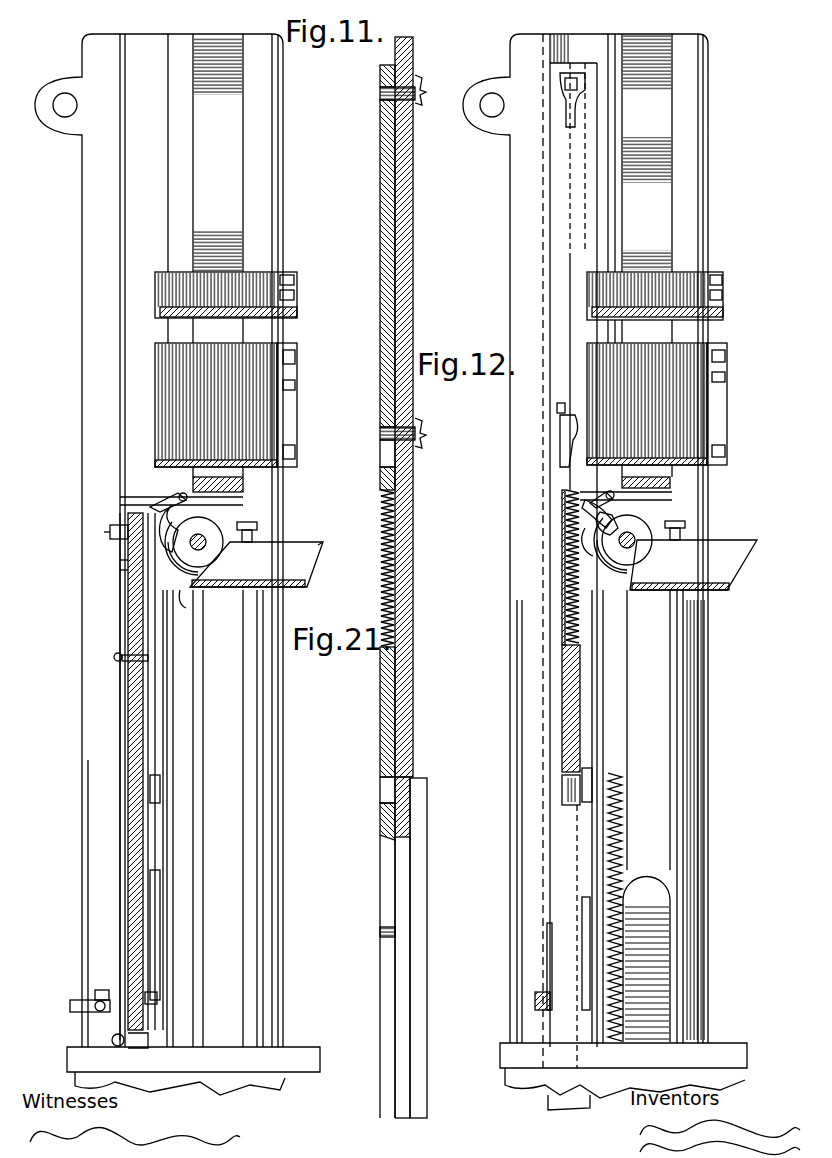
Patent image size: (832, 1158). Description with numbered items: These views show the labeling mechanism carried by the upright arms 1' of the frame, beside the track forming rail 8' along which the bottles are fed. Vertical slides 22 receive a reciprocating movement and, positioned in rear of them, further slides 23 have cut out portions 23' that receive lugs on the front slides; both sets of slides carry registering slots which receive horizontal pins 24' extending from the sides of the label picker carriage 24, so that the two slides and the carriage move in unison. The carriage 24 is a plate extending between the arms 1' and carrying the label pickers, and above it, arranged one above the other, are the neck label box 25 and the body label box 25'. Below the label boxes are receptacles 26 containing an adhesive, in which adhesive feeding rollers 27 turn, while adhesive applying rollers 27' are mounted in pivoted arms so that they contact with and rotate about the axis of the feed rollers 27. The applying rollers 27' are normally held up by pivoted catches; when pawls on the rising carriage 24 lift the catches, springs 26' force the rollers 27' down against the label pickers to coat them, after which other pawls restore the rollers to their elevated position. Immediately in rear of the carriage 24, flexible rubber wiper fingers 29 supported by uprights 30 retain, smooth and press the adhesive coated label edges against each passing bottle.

In FIG. 11, the upright arms 1' is at (175, 540).
In FIG. 21, the upright arms 1' is at (678, 730).
In FIG. 11, the track forming rails 8' is at (193, 1058).
In FIG. 21, the track forming rails 8' is at (605, 1076).
In FIG. 12, the slides 22 is at (414, 300).
In FIG. 12, the slides 23 is at (366, 591).
In FIG. 12, the cut out portions 23' is at (350, 655).
In FIG. 21, the cut out portions 23' is at (525, 918).
In FIG. 11, the label picker carriage 24 is at (90, 776).
In FIG. 12, the label picker carriage 24 is at (437, 255).
In FIG. 12, the pins 24' is at (363, 265).
In FIG. 21, the pins 24' is at (603, 276).
In FIG. 11, the neck label box 25 is at (168, 301).
In FIG. 21, the neck label box 25 is at (678, 292).
In FIG. 11, the body label box 25' is at (167, 405).
In FIG. 21, the body label box 25' is at (681, 404).
In FIG. 11, the adhesive receptacles 26 is at (331, 550).
In FIG. 21, the adhesive receptacles 26 is at (721, 523).
In FIG. 11, the springs 26' is at (252, 546).
In FIG. 11, the adhesive feeding rollers 27 is at (244, 552).
In FIG. 21, the adhesive feeding rollers 27 is at (675, 552).
In FIG. 21, the adhesive applying rollers 27' is at (568, 505).
In FIG. 11, the wiper fingers 29 is at (173, 885).
In FIG. 21, the wiper fingers 29 is at (607, 873).
In FIG. 11, the uprights 30 is at (167, 732).
In FIG. 21, the uprights 30 is at (597, 712).